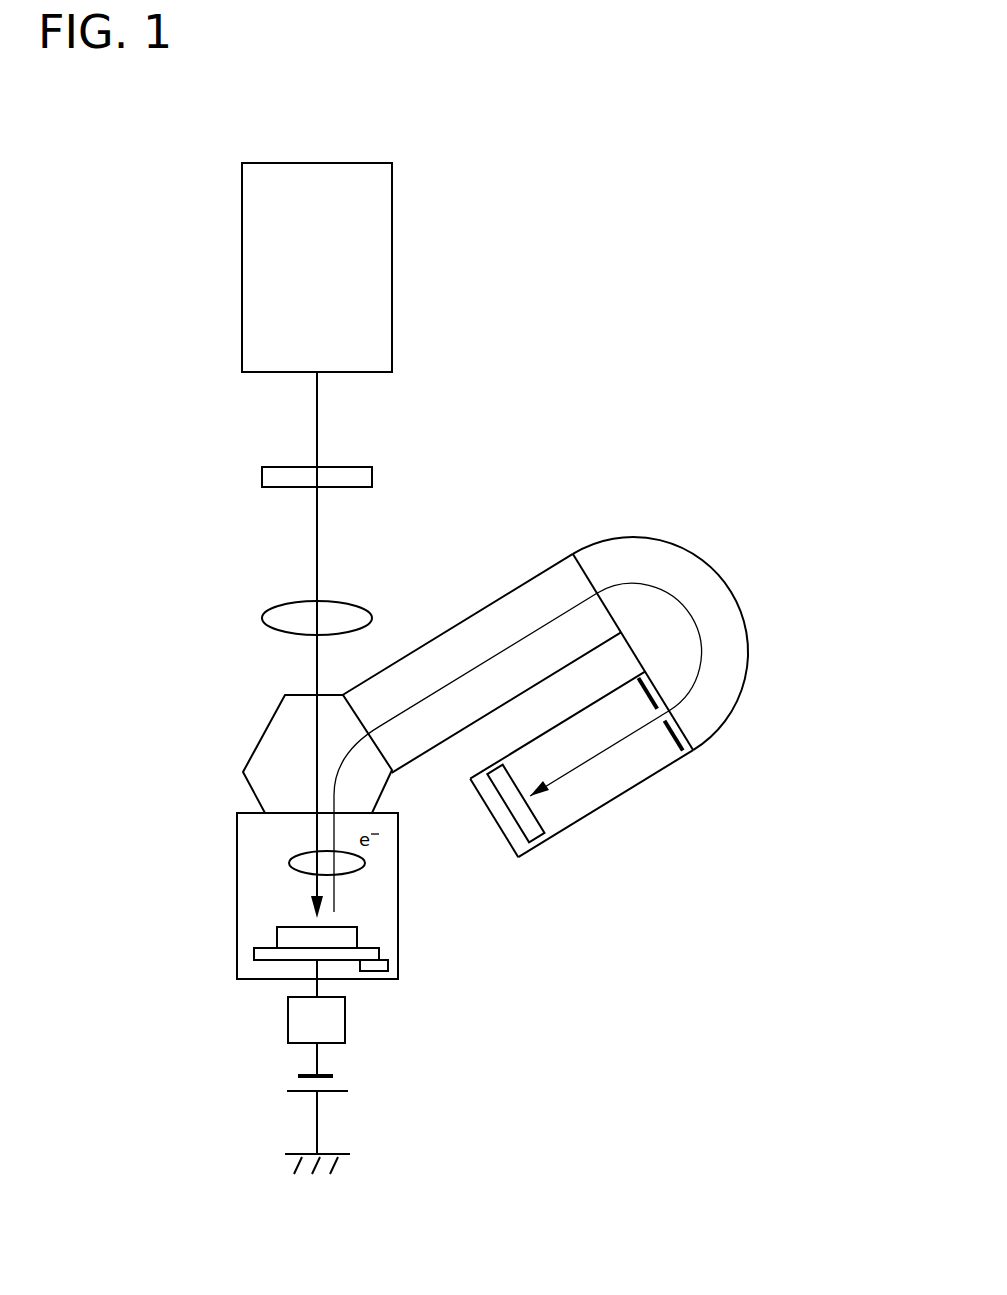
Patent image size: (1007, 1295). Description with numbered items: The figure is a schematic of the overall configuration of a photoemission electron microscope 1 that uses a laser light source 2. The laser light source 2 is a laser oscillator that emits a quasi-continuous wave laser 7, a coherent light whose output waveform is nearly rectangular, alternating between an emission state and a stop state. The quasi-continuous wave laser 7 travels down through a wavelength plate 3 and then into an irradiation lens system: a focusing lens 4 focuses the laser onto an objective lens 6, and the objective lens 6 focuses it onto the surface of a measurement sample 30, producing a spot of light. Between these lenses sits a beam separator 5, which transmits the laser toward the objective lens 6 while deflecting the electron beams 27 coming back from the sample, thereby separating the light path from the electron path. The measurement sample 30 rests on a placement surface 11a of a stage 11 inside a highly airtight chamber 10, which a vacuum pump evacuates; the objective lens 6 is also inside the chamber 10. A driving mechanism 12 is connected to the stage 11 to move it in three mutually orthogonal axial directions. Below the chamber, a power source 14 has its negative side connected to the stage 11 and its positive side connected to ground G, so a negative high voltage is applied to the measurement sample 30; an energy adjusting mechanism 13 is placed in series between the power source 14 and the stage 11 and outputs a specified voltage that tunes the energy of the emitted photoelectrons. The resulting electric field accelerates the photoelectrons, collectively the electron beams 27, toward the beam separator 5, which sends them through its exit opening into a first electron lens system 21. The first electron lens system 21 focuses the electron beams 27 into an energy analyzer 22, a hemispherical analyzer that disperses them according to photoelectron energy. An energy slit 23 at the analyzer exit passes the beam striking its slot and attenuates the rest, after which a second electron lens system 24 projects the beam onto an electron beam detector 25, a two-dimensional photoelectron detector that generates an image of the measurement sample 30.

The photoemission electron microscope 1 is at (533, 146).
The laser light source 2 is at (241, 251).
The wavelength plate 3 is at (262, 476).
The focusing lens 4 is at (263, 617).
The beam separator 5 is at (263, 733).
The objective lens 6 is at (289, 863).
The quasi-continuous wave laser 7 is at (315, 545).
The chamber 10 is at (237, 902).
The stage 11 is at (254, 952).
The placement surface 11a is at (368, 946).
The driving mechanism 12 is at (390, 964).
The energy adjusting mechanism 13 is at (288, 1019).
The power source 14 is at (358, 1081).
The first electron lens system 21 is at (520, 584).
The energy analyzer 22 is at (744, 605).
The energy slit 23 is at (668, 740).
The second electron lens system 24 is at (620, 797).
The electron beam detector 25 is at (544, 834).
The electron beams 27 is at (453, 682).
The measurement sample 30 is at (277, 937).
The ground G is at (294, 1152).